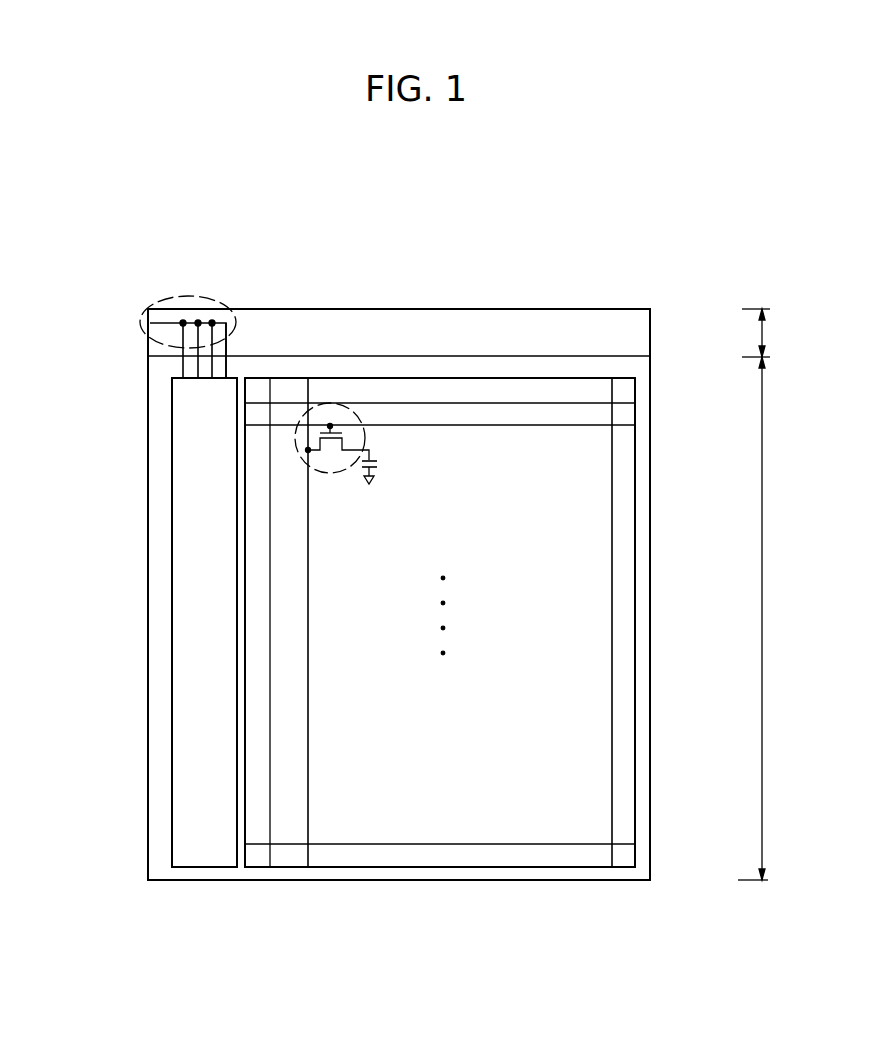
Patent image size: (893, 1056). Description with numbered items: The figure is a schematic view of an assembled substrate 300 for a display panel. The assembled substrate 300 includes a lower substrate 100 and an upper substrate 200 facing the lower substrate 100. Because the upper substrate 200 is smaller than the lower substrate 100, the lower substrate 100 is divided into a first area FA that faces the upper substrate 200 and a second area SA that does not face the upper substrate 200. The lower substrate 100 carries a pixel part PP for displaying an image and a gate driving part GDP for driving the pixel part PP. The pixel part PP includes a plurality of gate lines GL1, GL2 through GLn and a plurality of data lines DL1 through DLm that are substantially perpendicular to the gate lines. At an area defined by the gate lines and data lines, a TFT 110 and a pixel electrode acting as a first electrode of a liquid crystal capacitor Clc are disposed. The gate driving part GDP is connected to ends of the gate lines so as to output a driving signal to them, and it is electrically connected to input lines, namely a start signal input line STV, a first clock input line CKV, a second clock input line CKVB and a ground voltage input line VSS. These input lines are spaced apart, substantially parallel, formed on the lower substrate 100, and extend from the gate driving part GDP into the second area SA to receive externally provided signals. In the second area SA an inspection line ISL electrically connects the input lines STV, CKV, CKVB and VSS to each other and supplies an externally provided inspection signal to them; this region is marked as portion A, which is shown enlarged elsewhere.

The assembled substrate 300 is at (437, 222).
The lower substrate 100 is at (651, 320).
The upper substrate 200 is at (627, 356).
The TFT 110 is at (365, 433).
The second area SA is at (770, 333).
The first area FA is at (766, 618).
The gate driving part GDP is at (171, 550).
The inspection line ISL is at (166, 323).
The start signal input line STV is at (222, 326).
The second clock input line CKVB is at (183, 336).
The first clock input line CKV is at (198, 345).
The ground voltage input line VSS is at (212, 365).
The portion A is at (200, 295).
The pixel part PP is at (636, 492).
The first data line DL1 is at (270, 598).
The m-th data line DLm is at (612, 597).
The first gate line GL1 is at (480, 403).
The second gate line GL2 is at (543, 425).
The n-th gate line GLn is at (448, 844).
The liquid crystal capacitor Clc is at (384, 478).